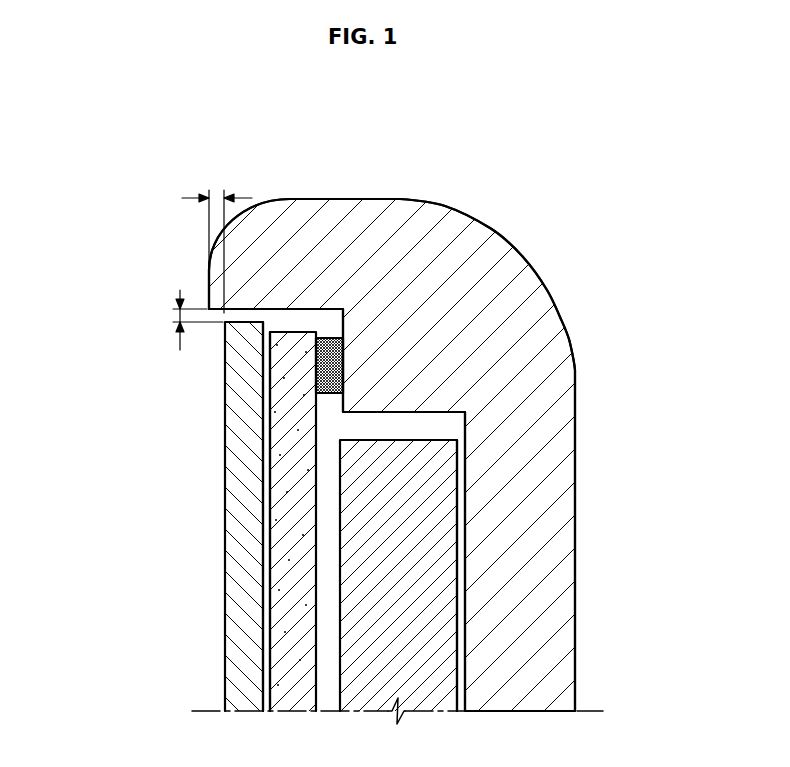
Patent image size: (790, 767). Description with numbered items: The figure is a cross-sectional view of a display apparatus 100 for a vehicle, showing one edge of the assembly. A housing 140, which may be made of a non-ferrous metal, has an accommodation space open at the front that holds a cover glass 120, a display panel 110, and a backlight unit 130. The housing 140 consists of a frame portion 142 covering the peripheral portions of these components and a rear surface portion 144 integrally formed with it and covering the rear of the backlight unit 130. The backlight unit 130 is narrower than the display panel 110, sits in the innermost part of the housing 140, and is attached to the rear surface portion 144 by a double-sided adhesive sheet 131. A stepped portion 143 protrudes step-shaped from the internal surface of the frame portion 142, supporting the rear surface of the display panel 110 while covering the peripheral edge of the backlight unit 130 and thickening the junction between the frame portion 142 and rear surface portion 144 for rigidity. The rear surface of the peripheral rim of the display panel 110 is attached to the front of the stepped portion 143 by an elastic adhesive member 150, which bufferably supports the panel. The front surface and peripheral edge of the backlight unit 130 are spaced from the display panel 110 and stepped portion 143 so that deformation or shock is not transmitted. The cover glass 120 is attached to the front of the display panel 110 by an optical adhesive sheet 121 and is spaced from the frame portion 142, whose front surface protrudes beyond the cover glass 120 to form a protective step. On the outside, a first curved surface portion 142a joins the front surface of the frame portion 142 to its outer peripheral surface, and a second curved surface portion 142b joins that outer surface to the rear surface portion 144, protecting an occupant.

The display apparatus 100 is at (138, 146).
The display panel 110 is at (285, 547).
The cover glass 120 is at (238, 605).
The optical adhesive sheet 121 is at (267, 497).
The backlight unit 130 is at (438, 493).
The double-sided adhesive sheet 131 is at (462, 532).
The housing 140 is at (606, 414).
The frame portion 142 is at (382, 210).
The first curved surface portion 142a is at (259, 207).
The second curved surface portion 142b is at (490, 228).
The stepped portion 143 is at (360, 378).
The rear surface portion 144 is at (552, 605).
The adhesive member 150 is at (331, 338).